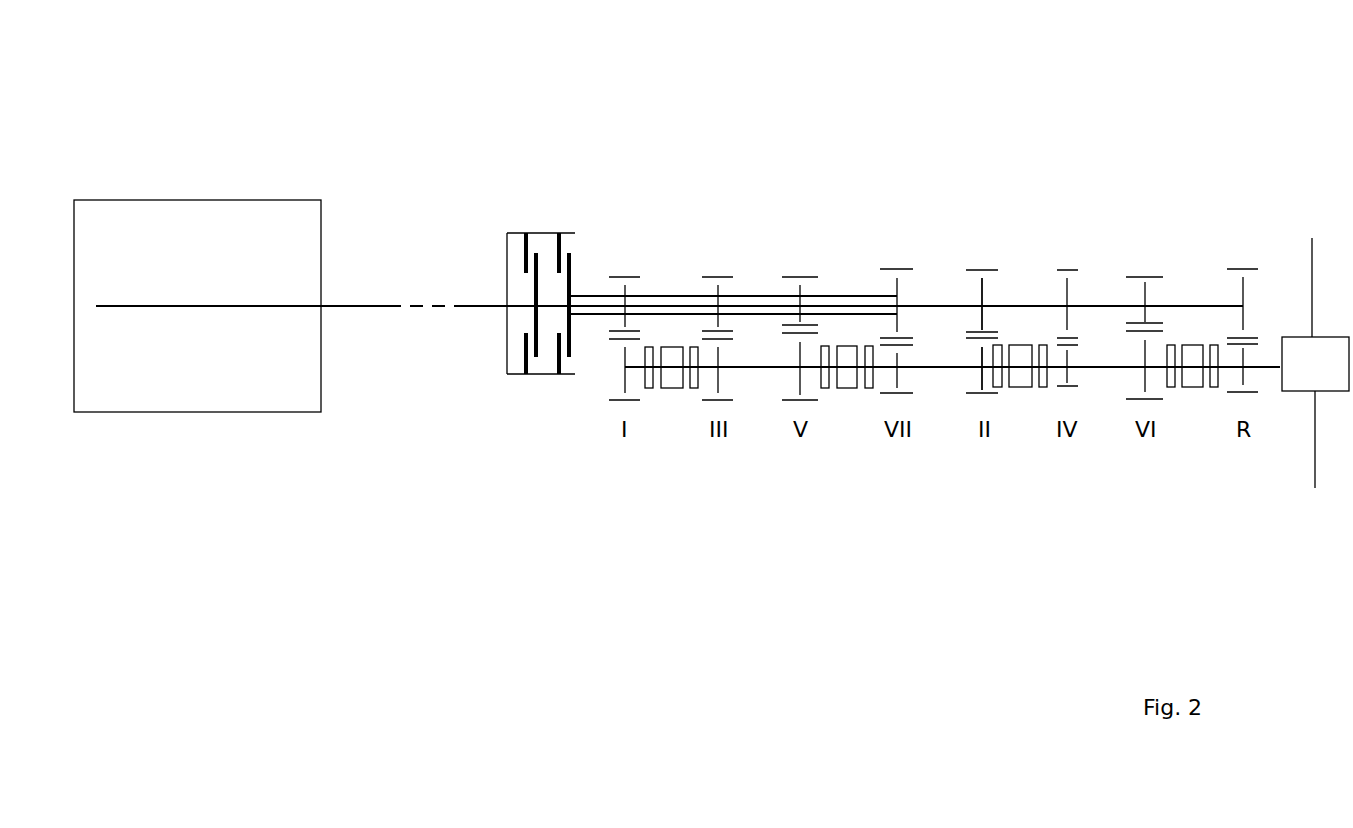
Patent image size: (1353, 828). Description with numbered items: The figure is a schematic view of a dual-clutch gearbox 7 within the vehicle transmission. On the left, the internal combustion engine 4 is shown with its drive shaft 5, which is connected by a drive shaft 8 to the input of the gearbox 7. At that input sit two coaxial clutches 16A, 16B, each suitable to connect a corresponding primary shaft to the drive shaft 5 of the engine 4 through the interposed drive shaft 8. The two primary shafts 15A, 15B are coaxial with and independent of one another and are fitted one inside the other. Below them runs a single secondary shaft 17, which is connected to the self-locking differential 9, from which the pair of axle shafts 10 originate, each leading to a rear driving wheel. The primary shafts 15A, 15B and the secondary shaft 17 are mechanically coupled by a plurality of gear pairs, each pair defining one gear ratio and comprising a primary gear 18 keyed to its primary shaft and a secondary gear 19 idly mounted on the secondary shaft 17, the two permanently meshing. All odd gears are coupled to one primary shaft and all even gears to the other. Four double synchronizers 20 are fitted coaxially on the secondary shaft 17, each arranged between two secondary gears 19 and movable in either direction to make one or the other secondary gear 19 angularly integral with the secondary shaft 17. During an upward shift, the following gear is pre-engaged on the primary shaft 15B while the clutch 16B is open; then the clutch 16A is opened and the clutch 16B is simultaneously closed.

The internal combustion engine 4 is at (158, 236).
The drive shaft 5 is at (245, 308).
The dual-clutch gearbox 7 is at (877, 110).
The drive shaft 8 is at (461, 302).
The self-locking differential 9 is at (1315, 364).
The axle shafts 10 is at (1312, 250).
The primary shaft 15A is at (590, 297).
The primary shaft 15B is at (1103, 302).
The clutch 16A is at (559, 392).
The clutch 16B is at (585, 348).
The secondary shaft 17 is at (773, 370).
The primary gear 18 is at (981, 289).
The secondary gear 19 is at (981, 379).
The double synchronizer 20 is at (671, 389).